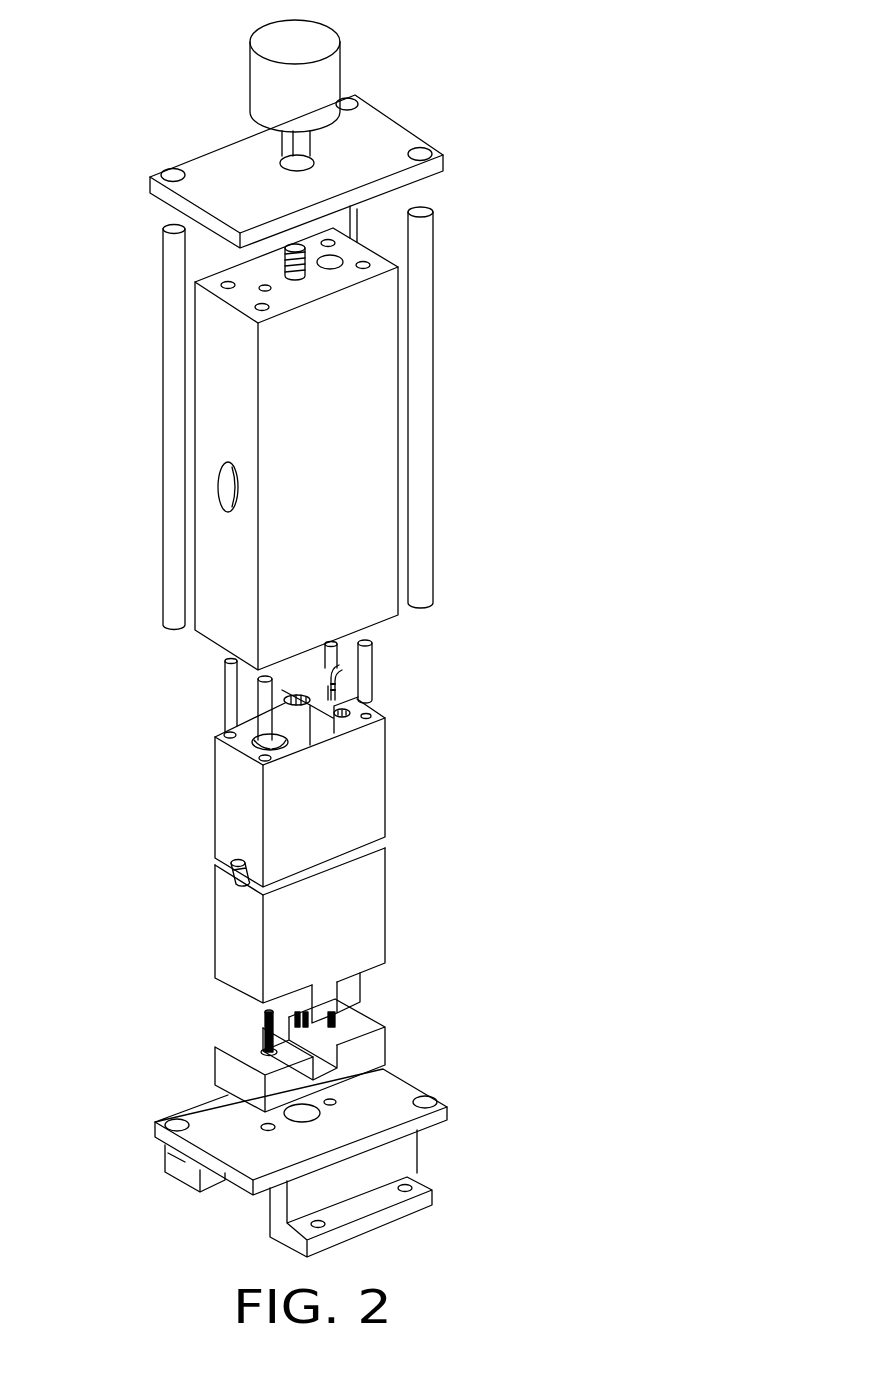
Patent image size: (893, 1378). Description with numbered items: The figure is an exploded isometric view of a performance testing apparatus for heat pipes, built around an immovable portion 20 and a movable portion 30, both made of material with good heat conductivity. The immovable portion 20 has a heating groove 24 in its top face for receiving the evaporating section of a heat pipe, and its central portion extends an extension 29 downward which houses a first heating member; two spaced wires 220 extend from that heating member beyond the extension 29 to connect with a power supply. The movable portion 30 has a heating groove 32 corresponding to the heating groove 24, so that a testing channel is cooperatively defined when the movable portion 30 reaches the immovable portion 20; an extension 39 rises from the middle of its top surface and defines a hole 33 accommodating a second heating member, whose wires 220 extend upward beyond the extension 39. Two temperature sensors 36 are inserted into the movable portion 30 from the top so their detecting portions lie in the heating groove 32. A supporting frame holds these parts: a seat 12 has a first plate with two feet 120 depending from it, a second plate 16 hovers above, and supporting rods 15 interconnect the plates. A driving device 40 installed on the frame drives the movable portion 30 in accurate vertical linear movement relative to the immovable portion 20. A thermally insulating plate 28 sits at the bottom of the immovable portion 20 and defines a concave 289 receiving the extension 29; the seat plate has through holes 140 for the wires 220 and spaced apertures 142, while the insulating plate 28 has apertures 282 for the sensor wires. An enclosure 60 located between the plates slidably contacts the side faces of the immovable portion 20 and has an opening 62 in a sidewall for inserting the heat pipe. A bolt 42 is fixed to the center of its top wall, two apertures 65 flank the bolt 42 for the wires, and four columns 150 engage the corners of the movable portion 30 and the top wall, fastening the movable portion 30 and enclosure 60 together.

The seat 12 is at (387, 1157).
The feet 120 is at (385, 1197).
The through holes 140 is at (310, 1114).
The spaced apertures 142 is at (340, 1098).
The supporting rods 15 is at (425, 260).
The columns 150 is at (367, 668).
The second plate 16 is at (380, 132).
The immovable portion 20 is at (238, 940).
The wires 220 is at (265, 1018).
The heating groove 24 is at (237, 883).
The thermally insulating plate 28 is at (225, 1070).
The spaced apertures 282 is at (338, 1027).
The concave 289 is at (328, 1055).
The extension 29 is at (330, 995).
The movable portion 30 is at (230, 790).
The heating groove 32 is at (225, 868).
The hole 33 is at (338, 697).
The temperature sensors 36 is at (350, 711).
The extension 39 is at (322, 733).
The driving device 40 is at (313, 42).
The bolt 42 is at (287, 262).
The enclosure 60 is at (217, 395).
The opening 62 is at (232, 480).
The apertures 65 is at (273, 291).